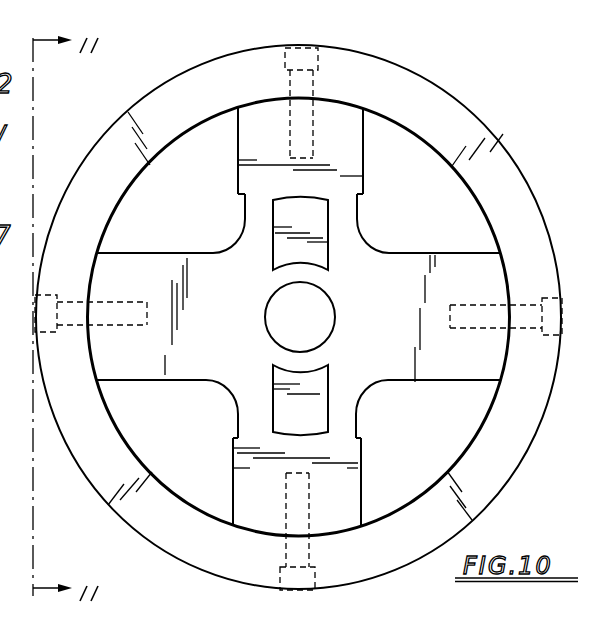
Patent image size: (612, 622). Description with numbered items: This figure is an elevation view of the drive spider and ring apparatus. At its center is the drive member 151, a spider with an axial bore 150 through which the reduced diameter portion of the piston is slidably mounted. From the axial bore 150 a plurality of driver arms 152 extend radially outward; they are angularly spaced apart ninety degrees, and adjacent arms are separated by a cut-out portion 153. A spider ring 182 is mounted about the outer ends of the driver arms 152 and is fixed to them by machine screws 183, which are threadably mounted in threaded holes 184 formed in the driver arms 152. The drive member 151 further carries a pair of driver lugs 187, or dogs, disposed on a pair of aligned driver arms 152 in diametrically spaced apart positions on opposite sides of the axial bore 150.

The axial bore 150 is at (320, 296).
The drive member 151 is at (372, 156).
The driver arms 152 is at (256, 141).
The cut-out portion 153 is at (238, 183).
The spider ring 182 is at (406, 62).
The machine screws 183 is at (302, 60).
The threaded holes 184 is at (310, 142).
The driver lugs 187 is at (279, 250).